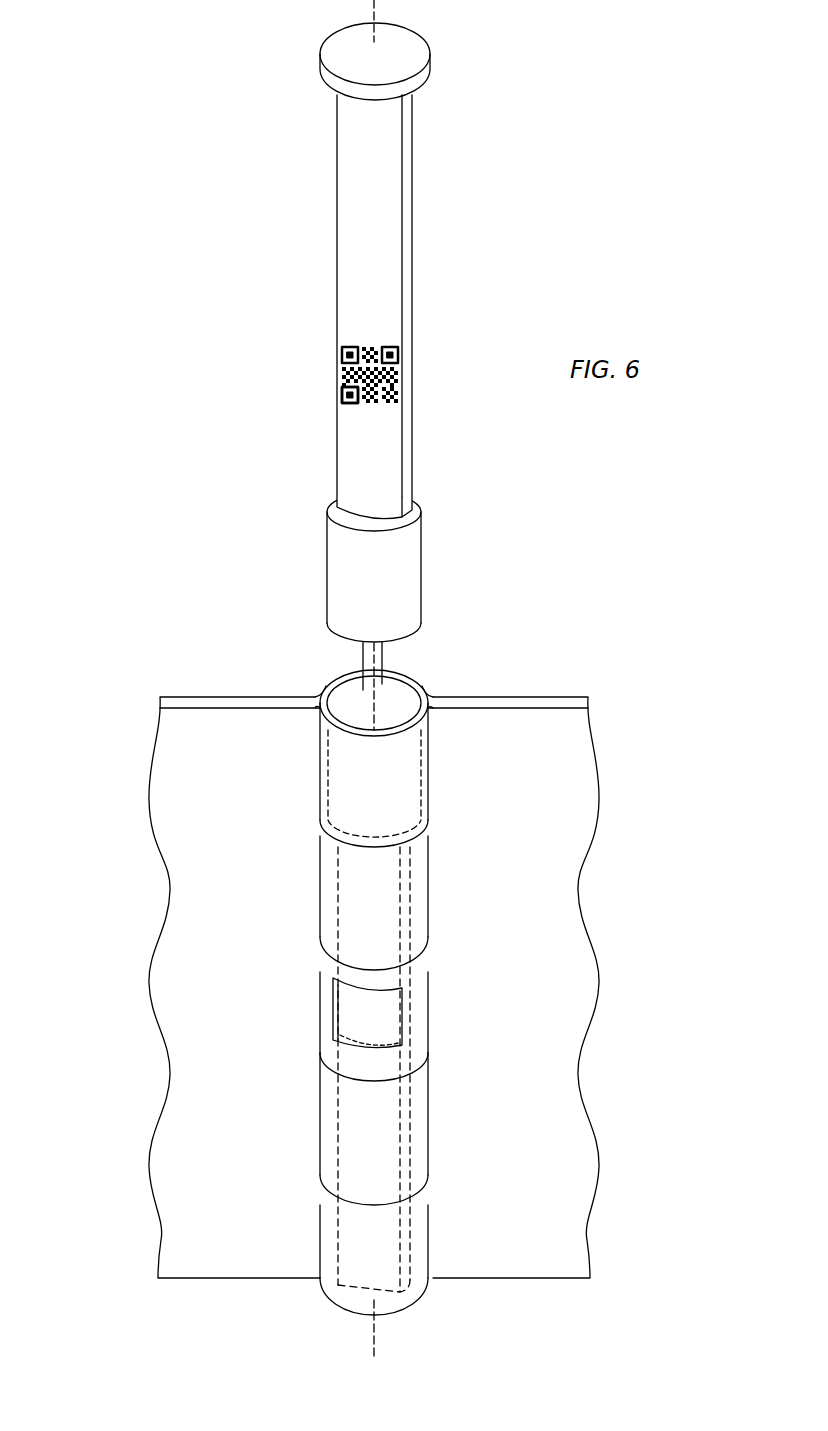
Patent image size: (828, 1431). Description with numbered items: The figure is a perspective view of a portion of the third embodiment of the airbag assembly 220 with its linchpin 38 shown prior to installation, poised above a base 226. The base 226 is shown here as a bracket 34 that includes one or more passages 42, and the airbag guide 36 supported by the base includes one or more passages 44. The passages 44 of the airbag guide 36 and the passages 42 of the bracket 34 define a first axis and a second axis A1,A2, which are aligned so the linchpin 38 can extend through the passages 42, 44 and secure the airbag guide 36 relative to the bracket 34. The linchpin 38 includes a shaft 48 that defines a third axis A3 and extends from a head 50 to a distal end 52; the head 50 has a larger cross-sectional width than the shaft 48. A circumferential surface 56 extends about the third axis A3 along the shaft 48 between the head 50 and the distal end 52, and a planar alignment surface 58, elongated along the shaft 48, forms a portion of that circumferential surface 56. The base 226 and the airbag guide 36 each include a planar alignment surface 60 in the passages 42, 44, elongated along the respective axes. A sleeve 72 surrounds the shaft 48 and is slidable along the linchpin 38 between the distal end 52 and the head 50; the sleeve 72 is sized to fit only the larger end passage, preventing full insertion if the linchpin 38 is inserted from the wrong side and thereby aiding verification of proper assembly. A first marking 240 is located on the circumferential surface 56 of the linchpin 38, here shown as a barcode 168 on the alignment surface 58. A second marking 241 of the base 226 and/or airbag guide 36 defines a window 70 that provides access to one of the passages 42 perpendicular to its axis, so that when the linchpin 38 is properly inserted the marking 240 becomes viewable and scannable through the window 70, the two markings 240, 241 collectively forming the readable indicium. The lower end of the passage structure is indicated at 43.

The bracket 34 is at (550, 740).
The airbag guide 36 is at (200, 742).
The linchpin 38 is at (466, 210).
The passage 42 is at (400, 712).
The bore bottom end 43 is at (398, 1310).
The passage 44 is at (365, 915).
The shaft 48 is at (412, 155).
The head 50 is at (355, 42).
The distal end 52 is at (420, 634).
The circumferential surface 56 is at (412, 275).
The alignment surface 58 is at (360, 212).
The alignment surface 60 is at (408, 918).
The window 70 is at (340, 1036).
The sleeve 72 is at (400, 556).
The barcode 168 is at (345, 388).
The airbag assembly 220 is at (121, 293).
The base 226 is at (538, 656).
The first marking 240 is at (345, 352).
The second marking 241 is at (403, 1020).
The first axis and second axis A1,A2 is at (362, 660).
The third axis A3 is at (385, 0).